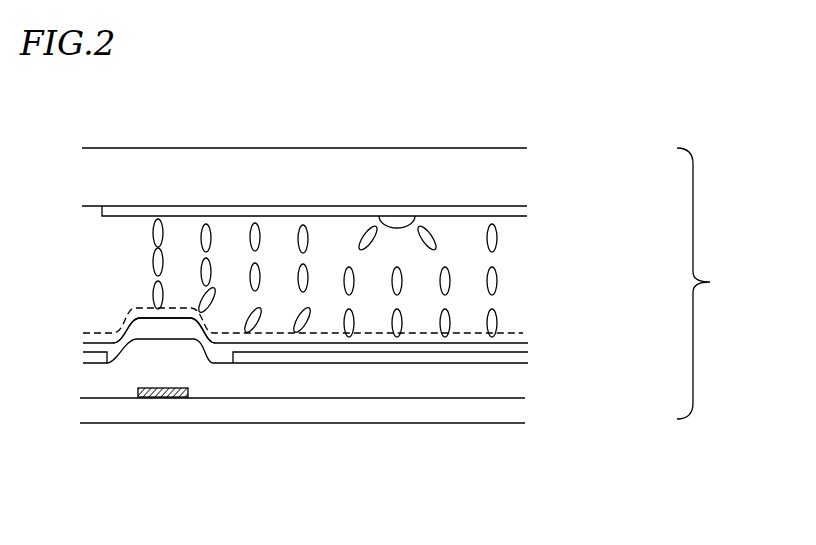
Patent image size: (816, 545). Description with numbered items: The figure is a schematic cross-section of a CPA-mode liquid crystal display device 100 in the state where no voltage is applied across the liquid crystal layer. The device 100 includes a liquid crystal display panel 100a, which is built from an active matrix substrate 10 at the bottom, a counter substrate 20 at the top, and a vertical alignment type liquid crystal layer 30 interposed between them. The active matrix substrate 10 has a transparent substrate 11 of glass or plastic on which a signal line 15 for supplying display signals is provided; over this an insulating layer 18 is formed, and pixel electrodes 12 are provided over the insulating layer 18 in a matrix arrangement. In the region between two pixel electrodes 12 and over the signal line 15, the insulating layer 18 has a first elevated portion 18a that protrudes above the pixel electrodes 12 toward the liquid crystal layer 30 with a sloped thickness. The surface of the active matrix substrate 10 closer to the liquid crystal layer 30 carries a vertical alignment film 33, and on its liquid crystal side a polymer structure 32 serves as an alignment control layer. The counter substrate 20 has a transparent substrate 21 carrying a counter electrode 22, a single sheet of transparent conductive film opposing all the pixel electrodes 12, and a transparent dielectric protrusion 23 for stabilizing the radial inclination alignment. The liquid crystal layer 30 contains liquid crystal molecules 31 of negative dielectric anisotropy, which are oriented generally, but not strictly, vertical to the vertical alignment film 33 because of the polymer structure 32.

The liquid crystal display device 100 is at (633, 104).
The liquid crystal display panel 100a is at (722, 283).
The active matrix substrate 10 is at (557, 355).
The transparent substrate 11 is at (409, 410).
The pixel electrode 12 is at (310, 365).
The signal line 15 is at (156, 398).
The insulating layer 18 is at (481, 385).
The first elevated portion 18a is at (157, 353).
The counter substrate 20 is at (565, 147).
The transparent substrate 21 is at (248, 180).
The counter electrode 22 is at (328, 212).
The protrusion 23 is at (395, 223).
The liquid crystal layer 30 is at (536, 281).
The liquid crystal molecule 31 is at (497, 243).
The polymer structure 32 is at (528, 342).
The vertical alignment film 33 is at (530, 351).